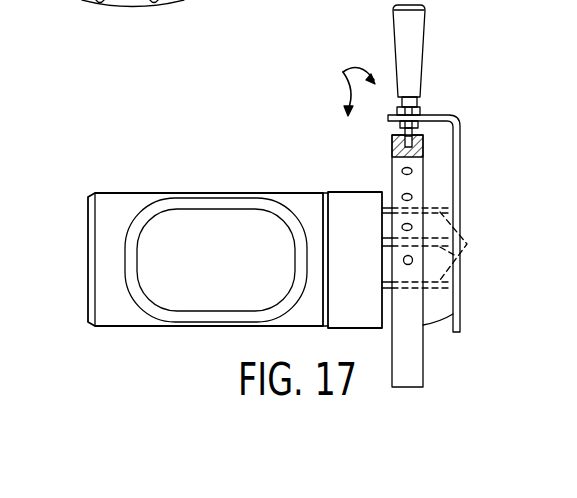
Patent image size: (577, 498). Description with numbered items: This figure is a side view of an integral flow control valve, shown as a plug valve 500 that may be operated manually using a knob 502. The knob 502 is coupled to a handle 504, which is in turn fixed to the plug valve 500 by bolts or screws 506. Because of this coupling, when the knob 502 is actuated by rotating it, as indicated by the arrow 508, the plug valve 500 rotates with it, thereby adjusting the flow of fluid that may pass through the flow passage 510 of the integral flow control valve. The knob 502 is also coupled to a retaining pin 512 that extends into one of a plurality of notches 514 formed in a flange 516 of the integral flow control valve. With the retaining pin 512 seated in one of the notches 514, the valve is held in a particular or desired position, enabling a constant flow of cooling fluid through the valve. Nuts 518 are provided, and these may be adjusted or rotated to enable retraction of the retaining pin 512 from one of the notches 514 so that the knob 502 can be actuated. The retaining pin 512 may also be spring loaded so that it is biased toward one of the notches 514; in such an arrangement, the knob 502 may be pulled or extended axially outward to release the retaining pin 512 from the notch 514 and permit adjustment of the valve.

The plug valve 500 is at (118, 204).
The knob 502 is at (416, 37).
The handle 504 is at (461, 167).
The bolts or screws 506 is at (466, 245).
The arrow 508 is at (343, 72).
The flow passage 510 is at (207, 293).
The retaining pin 512 is at (424, 137).
The notches 514 is at (412, 226).
The flange 516 is at (410, 368).
The nuts 518 is at (400, 129).